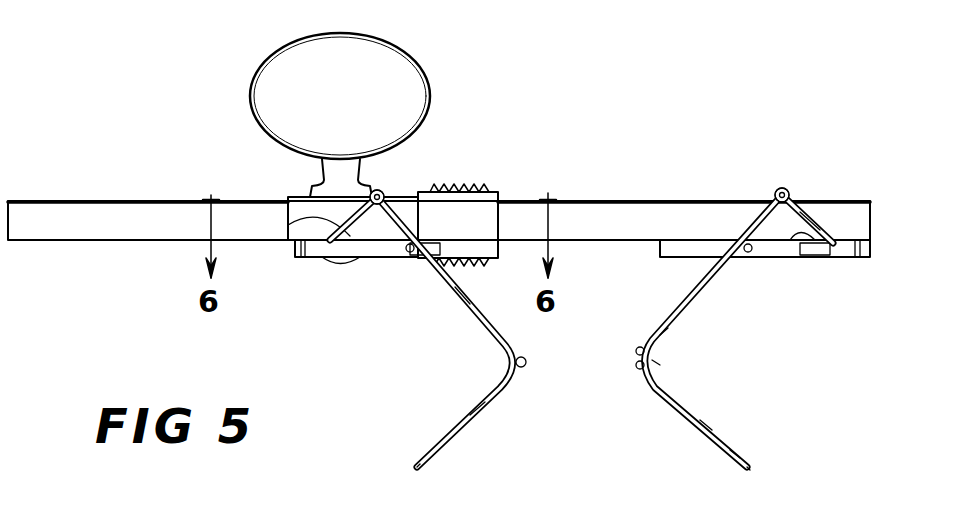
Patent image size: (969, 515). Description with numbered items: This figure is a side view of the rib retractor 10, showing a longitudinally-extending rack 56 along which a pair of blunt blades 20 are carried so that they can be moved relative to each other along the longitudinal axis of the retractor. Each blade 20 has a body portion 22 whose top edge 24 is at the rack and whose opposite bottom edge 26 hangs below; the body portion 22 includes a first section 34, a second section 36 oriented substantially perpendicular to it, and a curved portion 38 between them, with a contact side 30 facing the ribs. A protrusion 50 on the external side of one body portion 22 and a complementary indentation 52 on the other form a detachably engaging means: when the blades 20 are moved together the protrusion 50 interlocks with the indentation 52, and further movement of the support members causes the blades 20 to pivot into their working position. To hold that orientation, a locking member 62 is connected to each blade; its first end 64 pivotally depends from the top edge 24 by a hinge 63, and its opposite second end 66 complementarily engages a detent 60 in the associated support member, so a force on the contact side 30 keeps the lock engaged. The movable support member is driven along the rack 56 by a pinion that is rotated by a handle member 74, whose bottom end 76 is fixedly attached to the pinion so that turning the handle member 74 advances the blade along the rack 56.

The rib retractor 10 is at (690, 38).
The blunt blade 20 is at (465, 415).
The body portion 22 is at (668, 333).
The top edge 24 is at (398, 202).
The bottom edge 26 is at (413, 465).
The contact side 30 is at (473, 308).
The first section 34 is at (700, 300).
The second section 36 is at (743, 452).
The curved portion 38 is at (658, 357).
The protrusion 50 is at (527, 362).
The indentation 52 is at (636, 360).
The rack 56 is at (113, 224).
The detent 60 is at (396, 254).
The locking member 62 is at (330, 234).
The hinge 63 is at (380, 190).
The first end 64 is at (795, 205).
The second end 66 is at (842, 252).
The handle member 74 is at (305, 48).
The bottom end 76 is at (312, 190).